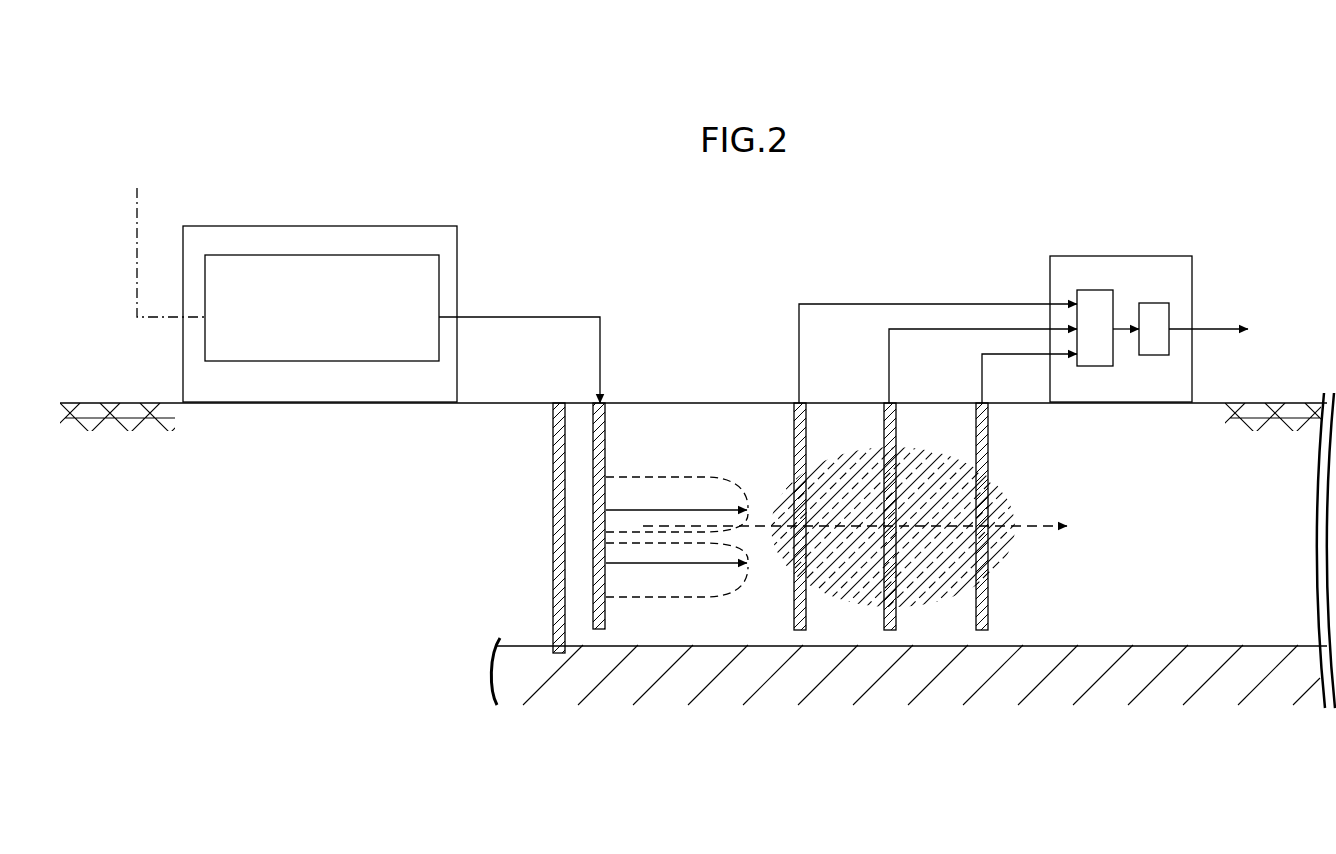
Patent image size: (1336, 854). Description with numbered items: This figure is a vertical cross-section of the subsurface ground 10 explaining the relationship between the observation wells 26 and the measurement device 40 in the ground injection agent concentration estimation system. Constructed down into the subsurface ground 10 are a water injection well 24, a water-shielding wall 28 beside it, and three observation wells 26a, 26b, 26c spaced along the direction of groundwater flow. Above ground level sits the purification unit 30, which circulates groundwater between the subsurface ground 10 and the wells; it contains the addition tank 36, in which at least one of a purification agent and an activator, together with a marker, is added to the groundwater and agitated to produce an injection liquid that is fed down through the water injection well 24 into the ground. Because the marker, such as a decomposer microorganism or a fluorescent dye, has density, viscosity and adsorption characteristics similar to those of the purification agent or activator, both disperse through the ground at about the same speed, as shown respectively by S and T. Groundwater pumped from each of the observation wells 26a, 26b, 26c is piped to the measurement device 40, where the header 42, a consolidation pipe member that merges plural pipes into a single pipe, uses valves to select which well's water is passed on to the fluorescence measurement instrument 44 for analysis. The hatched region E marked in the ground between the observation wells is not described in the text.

The subsurface ground 10 is at (1200, 613).
The water injection well 24 is at (596, 615).
The observation wells 26 is at (903, 615).
The observation well 26a is at (806, 620).
The observation well 26b is at (896, 620).
The observation well 26c is at (994, 590).
The water-shielding wall 28 is at (553, 608).
The purification unit 30 is at (368, 272).
The addition tank 36 is at (348, 255).
The measurement device 40 is at (1023, 332).
The header 42 is at (1093, 366).
The fluorescence measurement instrument 44 is at (1150, 355).
The dispersion of purification agent or activator S is at (702, 477).
The dispersion of marker T is at (694, 597).
The purification region E is at (937, 556).